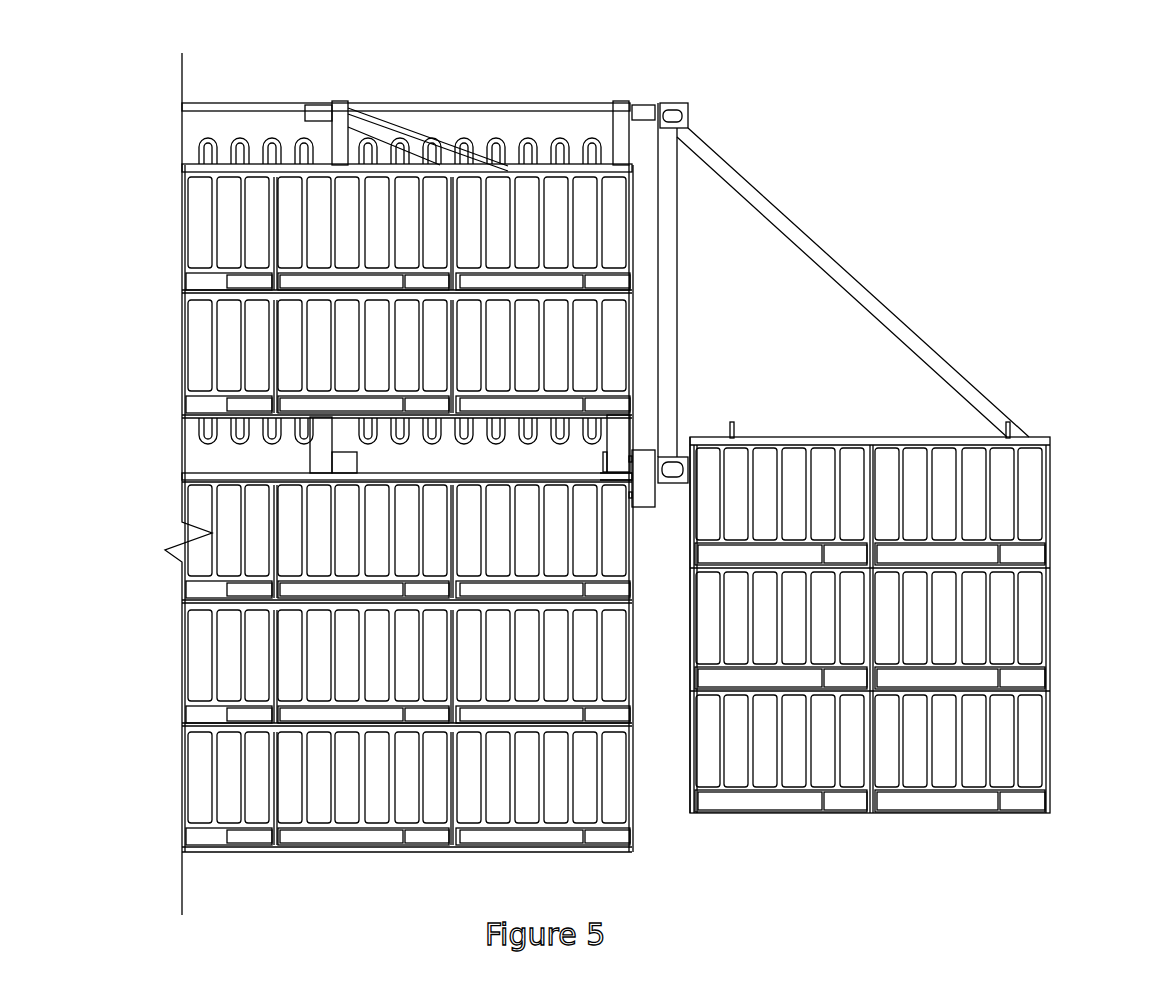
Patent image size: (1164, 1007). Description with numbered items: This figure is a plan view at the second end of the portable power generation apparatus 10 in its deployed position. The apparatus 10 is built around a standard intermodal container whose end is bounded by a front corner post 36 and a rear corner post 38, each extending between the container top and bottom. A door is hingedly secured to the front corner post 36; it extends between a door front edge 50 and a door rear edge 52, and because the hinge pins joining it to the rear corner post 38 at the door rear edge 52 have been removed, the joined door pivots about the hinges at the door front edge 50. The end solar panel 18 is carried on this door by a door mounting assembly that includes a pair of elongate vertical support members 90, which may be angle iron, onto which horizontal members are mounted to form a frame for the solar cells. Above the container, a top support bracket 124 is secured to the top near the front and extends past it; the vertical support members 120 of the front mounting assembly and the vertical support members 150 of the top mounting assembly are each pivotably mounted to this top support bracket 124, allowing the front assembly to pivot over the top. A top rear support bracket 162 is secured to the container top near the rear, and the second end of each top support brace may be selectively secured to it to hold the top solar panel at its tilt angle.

The apparatus for portable power generation 10 is at (958, 148).
The end solar panel 18 is at (1049, 533).
The front corner post 36 is at (675, 483).
The rear corner post 38 is at (666, 103).
The door front edge 50 is at (686, 432).
The door rear edge 52 is at (1060, 437).
The vertical support member 90 is at (987, 437).
The vertical support member 120 is at (630, 463).
The top support bracket 124 is at (643, 453).
The vertical support member 150 is at (617, 432).
The top rear support bracket 162 is at (640, 106).